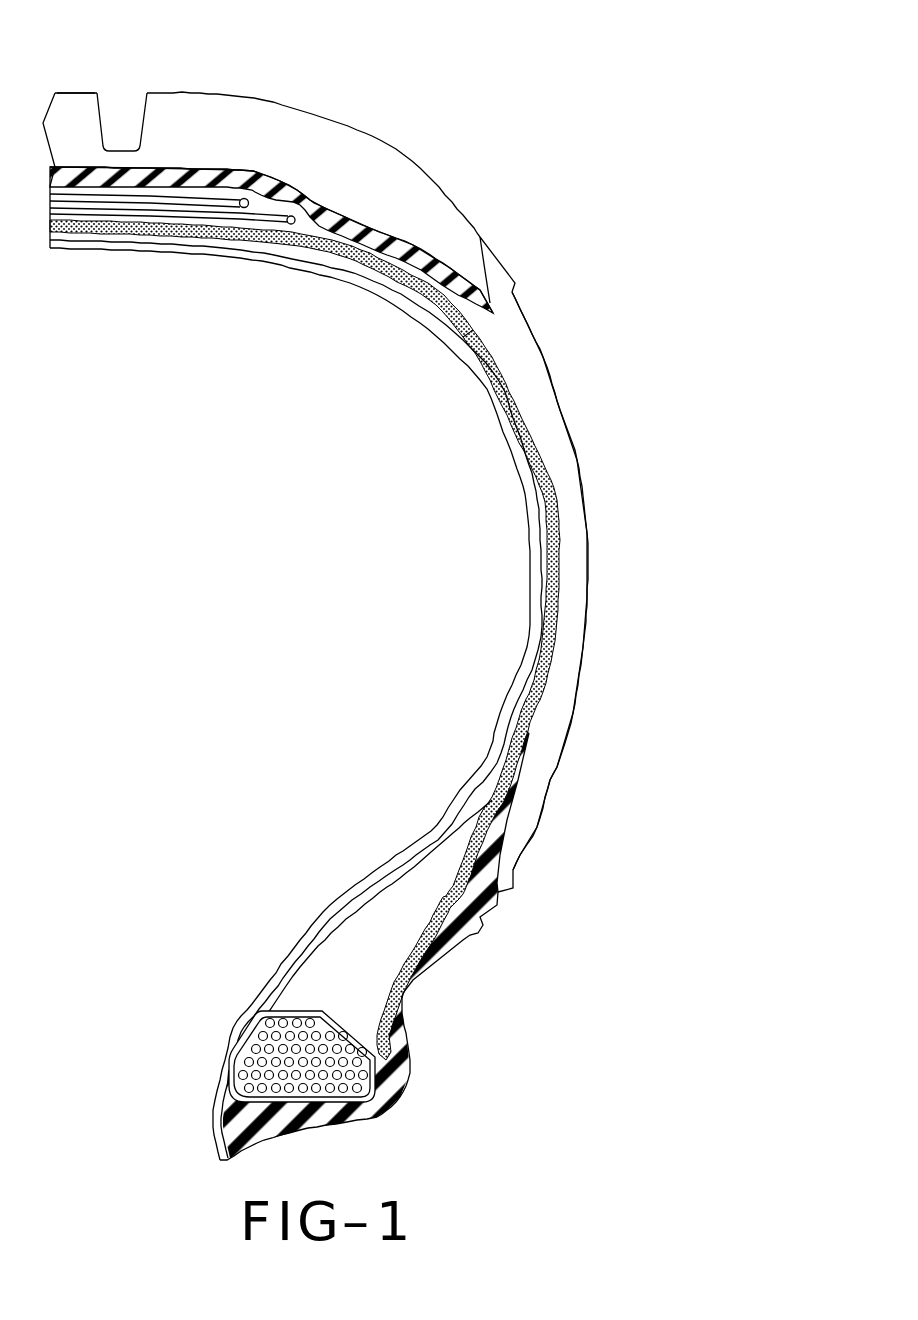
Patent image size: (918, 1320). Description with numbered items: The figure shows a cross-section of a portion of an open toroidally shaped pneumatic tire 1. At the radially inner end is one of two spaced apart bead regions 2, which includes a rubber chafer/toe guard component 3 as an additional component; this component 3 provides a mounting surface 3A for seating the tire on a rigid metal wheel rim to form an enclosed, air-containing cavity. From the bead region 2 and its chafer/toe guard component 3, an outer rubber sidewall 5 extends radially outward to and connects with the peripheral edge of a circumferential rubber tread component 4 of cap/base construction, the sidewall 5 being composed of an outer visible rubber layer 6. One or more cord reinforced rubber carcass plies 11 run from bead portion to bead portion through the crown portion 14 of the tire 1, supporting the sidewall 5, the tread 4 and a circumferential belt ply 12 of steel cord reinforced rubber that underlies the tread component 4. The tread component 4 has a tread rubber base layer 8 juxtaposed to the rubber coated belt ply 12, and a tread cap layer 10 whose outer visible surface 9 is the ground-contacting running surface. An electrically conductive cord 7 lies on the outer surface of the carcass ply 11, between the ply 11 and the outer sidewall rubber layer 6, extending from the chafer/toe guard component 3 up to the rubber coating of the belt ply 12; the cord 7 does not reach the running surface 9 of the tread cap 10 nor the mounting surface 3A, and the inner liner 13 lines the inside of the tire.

The tire 1 is at (584, 195).
The bead region 2 is at (270, 1073).
The rubber chafer/toe guard component 3 is at (390, 1093).
The mounting surface 3A is at (303, 1127).
The rubber tread component 4 is at (178, 75).
The rubber sidewall 5 is at (612, 548).
The outer sidewall rubber layer 6 is at (565, 473).
The electrically conductive cord 7 is at (390, 275).
The tread rubber base layer 8 is at (380, 224).
The outer visible surface of the tread cap layer 9 is at (293, 165).
The tread cap layer 10 is at (80, 92).
The carcass ply 11 is at (543, 623).
The belt ply 12 is at (190, 223).
The inner liner 13 is at (515, 457).
The crown portion 14 is at (100, 226).